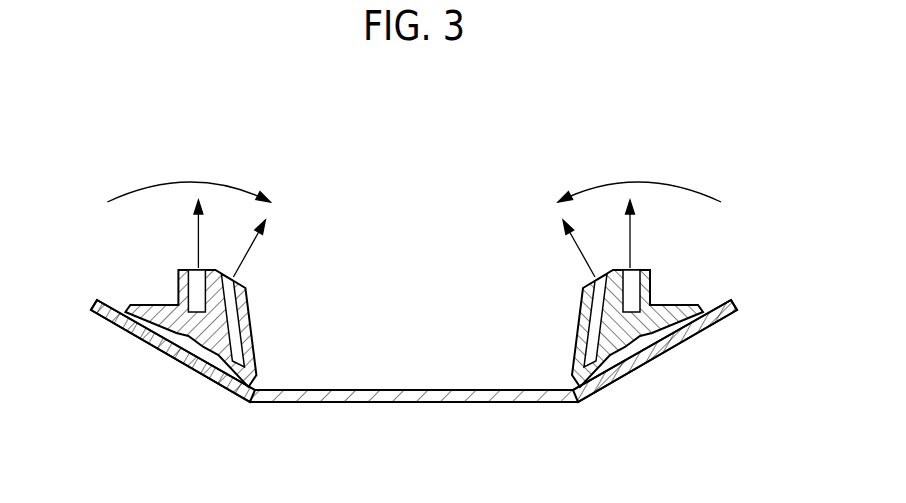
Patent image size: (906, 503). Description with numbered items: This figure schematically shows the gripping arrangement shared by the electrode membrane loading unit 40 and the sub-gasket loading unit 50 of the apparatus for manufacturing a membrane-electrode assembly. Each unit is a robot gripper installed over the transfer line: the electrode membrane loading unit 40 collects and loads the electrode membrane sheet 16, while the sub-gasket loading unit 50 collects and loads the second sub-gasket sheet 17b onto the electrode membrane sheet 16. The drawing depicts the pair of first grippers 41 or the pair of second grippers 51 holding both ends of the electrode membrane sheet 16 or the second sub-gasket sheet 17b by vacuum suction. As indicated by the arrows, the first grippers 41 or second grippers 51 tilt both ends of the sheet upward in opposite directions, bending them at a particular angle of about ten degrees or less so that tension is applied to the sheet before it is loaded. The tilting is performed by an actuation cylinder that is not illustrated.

The electrode membrane loading unit 40 is at (414, 246).
The sub-gasket loading unit 50 is at (414, 246).
The first grippers 41 is at (414, 284).
The second grippers 51 is at (414, 284).
The electrode membrane sheet 16 is at (414, 388).
The second sub-gasket sheet 17b is at (413, 402).